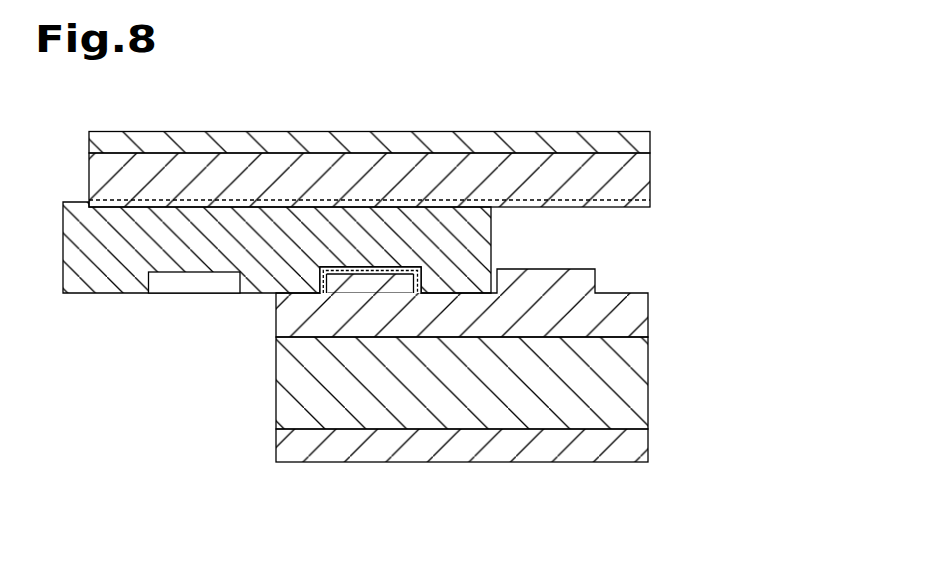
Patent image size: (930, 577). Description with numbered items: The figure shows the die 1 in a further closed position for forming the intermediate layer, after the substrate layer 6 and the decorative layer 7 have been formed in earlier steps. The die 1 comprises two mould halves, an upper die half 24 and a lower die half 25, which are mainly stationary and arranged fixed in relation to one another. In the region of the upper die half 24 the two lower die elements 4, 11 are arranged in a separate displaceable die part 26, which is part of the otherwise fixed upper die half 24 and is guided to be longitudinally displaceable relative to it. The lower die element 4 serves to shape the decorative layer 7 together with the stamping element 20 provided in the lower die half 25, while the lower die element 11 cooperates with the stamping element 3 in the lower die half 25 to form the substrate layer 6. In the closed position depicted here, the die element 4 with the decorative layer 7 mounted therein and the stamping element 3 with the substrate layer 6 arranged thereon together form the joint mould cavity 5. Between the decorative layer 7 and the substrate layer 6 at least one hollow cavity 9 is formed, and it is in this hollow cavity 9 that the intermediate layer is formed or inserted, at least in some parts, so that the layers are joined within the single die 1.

The die 1 is at (434, 276).
The stamping element 3 is at (362, 286).
The lower die element 4 is at (400, 287).
The joint mould cavity 5 is at (381, 261).
The substrate layer 6 is at (339, 284).
The decorative layer 7 is at (331, 267).
The hollow cavity 9 is at (360, 273).
The lower die element 11 is at (201, 272).
The stamping element 20 is at (550, 281).
The upper die half 24 is at (683, 117).
The lower die half 25 is at (386, 294).
The displaceable die part 26 is at (483, 251).